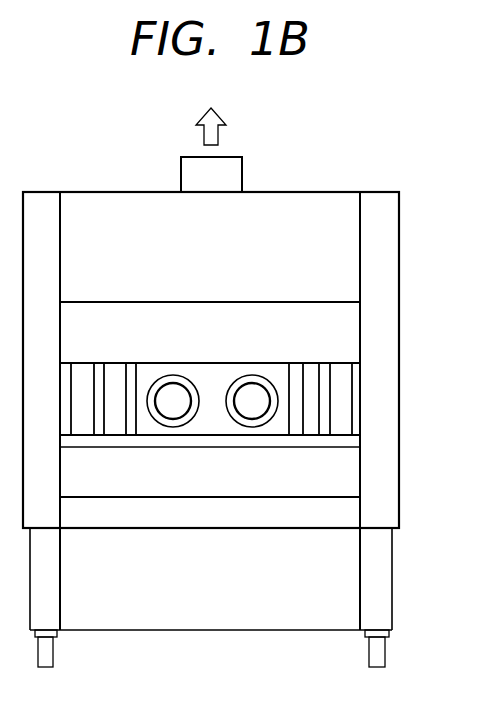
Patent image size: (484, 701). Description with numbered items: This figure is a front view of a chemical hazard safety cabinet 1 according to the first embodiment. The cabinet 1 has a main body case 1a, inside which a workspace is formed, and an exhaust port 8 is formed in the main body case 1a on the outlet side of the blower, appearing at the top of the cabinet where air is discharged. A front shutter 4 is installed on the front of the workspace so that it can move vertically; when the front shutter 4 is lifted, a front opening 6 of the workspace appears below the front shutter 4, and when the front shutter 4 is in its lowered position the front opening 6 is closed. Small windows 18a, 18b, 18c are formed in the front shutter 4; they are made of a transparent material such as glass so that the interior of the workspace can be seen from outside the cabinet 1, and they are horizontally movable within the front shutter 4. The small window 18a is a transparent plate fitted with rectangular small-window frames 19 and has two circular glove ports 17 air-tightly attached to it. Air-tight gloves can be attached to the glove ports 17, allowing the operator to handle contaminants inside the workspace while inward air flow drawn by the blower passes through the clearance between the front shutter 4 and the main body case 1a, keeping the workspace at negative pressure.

The chemical hazard safety cabinet 1 is at (345, 181).
The main body case 1a is at (88, 191).
The exhaust port 8 is at (242, 172).
The front shutter 4 is at (325, 373).
The small window 18a is at (212, 413).
The small window 18b is at (310, 400).
The small window 18c is at (337, 393).
The glove port 17 is at (250, 410).
The small-window frame 19 is at (298, 425).
The front opening 6 is at (324, 475).